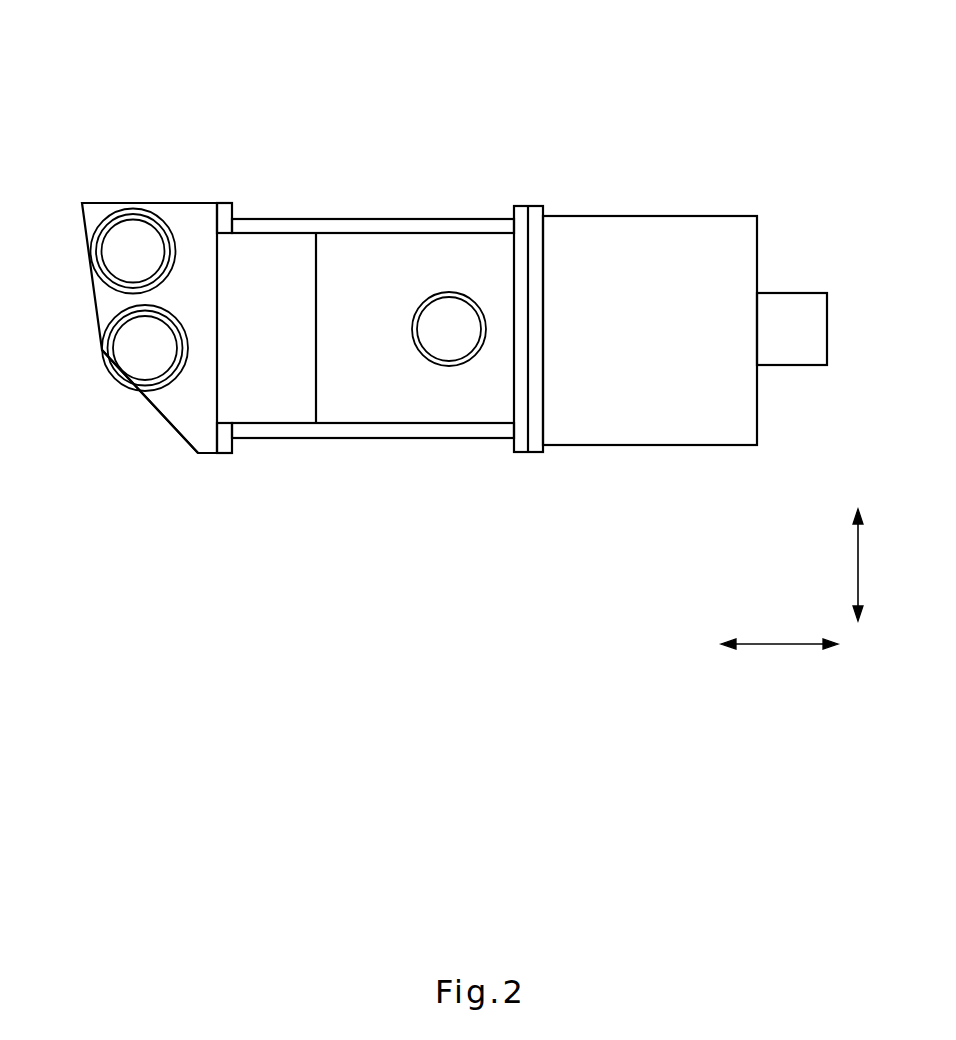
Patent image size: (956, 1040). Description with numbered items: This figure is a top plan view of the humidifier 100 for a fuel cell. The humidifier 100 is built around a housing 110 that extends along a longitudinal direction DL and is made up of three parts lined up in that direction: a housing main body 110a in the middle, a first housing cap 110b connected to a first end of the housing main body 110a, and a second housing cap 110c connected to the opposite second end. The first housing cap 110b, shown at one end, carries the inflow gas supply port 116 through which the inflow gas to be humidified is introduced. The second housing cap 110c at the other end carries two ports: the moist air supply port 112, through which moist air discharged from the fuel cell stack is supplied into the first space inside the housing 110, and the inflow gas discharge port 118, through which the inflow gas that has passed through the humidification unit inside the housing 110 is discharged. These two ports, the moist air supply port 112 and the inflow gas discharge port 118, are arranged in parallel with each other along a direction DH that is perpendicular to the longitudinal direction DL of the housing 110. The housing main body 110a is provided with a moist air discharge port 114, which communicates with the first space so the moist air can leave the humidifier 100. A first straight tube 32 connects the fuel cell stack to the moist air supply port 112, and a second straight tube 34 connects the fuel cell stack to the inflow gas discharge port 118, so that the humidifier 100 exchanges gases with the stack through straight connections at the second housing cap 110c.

The humidifier for a fuel cell 100 is at (222, 40).
The housing 110 is at (588, 522).
The housing main body 110a is at (413, 408).
The first housing cap 110b is at (585, 410).
The second housing cap 110c is at (203, 457).
The moist air supply port 112 is at (118, 375).
The moist air discharge port 114 is at (448, 302).
The inflow gas supply port 116 is at (828, 328).
The inflow gas discharge port 118 is at (121, 226).
The first straight tube 32 is at (137, 395).
The second straight tube 34 is at (163, 226).
The direction perpendicular to the longitudinal direction DH is at (858, 565).
The longitudinal direction of the housing DL is at (778, 646).